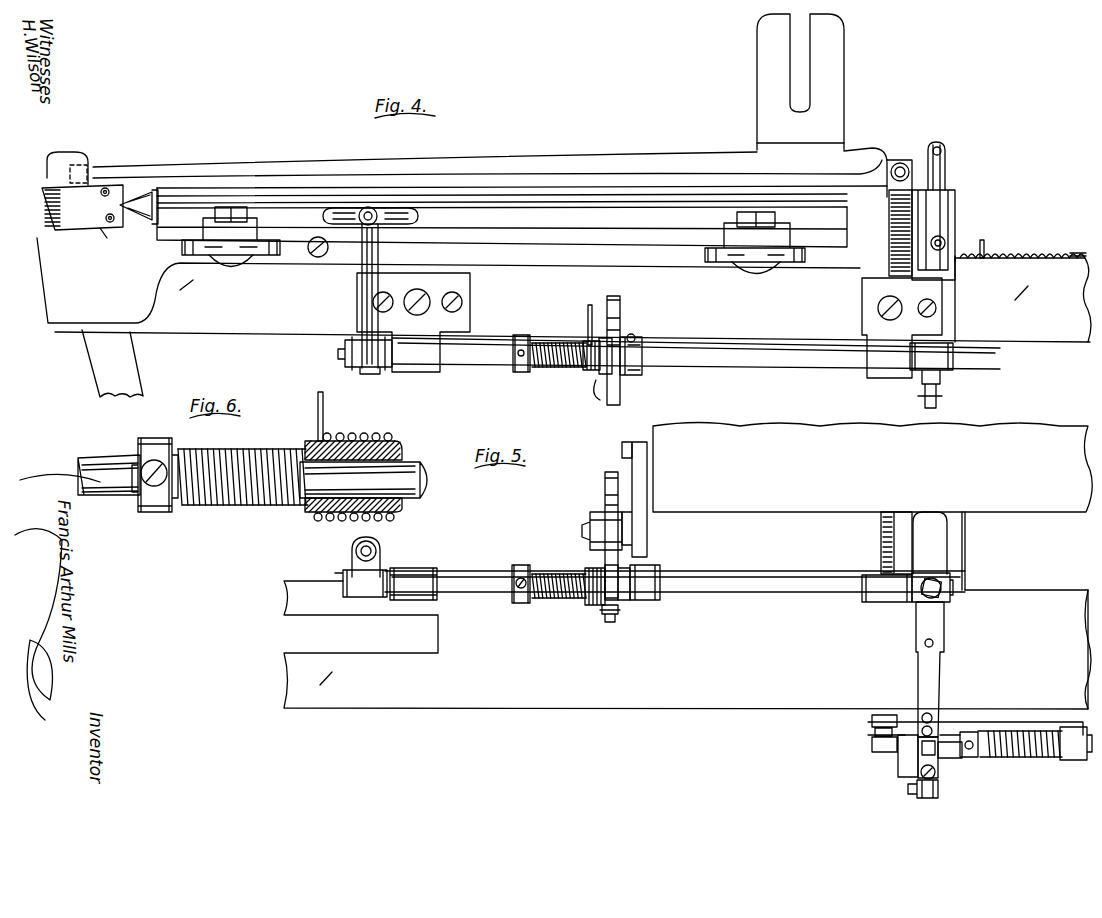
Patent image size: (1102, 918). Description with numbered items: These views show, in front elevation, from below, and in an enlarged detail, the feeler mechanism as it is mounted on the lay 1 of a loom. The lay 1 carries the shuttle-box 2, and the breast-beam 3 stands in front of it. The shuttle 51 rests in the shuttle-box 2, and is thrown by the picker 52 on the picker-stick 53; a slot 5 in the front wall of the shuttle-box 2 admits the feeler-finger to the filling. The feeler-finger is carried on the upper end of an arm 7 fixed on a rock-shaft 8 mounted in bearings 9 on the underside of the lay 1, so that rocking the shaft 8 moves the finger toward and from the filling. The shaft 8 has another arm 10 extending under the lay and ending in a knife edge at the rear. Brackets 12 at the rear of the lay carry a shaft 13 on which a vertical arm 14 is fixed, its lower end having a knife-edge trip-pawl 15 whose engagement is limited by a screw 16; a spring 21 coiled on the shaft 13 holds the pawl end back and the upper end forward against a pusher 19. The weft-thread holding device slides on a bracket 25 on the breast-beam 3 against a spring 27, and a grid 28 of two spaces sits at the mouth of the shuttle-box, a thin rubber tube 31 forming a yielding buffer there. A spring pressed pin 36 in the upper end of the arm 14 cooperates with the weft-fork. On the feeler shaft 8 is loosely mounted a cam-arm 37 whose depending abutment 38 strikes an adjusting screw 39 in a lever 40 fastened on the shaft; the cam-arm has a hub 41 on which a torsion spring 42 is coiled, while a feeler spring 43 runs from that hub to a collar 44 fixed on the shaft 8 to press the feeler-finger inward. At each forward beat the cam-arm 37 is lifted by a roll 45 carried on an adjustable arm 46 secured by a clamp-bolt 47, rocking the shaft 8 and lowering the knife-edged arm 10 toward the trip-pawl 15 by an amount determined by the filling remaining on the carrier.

In FIG. 4, the lay 1 is at (564, 290).
In FIG. 5, the lay 1 is at (687, 645).
In FIG. 4, the shuttle-box 2 is at (478, 197).
In FIG. 5, the breast-beam 3 is at (872, 468).
In FIG. 4, the slot 5 is at (415, 216).
In FIG. 4, the arm 7 is at (368, 266).
In FIG. 4, the shaft 8 is at (480, 357).
In FIG. 6, the shaft 8 is at (107, 455).
In FIG. 5, the shaft 8 is at (482, 588).
In FIG. 4, the bearings 9 is at (649, 325).
In FIG. 5, the bearings 9 is at (420, 563).
In FIG. 4, the arm 10 is at (953, 362).
In FIG. 5, the arm 10 is at (932, 672).
In FIG. 4, the brackets 12 is at (958, 254).
In FIG. 5, the brackets 12 is at (950, 762).
In FIG. 5, the shaft 13 is at (987, 762).
In FIG. 4, the arm 14 is at (928, 144).
In FIG. 5, the knife-edge trip-pawl 15 is at (930, 802).
In FIG. 5, the screw 16 is at (915, 770).
In FIG. 4, the pusher 19 is at (900, 162).
In FIG. 4, the spring 21 is at (1022, 258).
In FIG. 5, the spring 21 is at (1022, 760).
In FIG. 5, the bracket 25 is at (967, 545).
In FIG. 5, the spring 27 is at (880, 540).
In FIG. 4, the grid 28 is at (955, 200).
In FIG. 4, the rubber tube 31 is at (888, 220).
In FIG. 4, the spring pressed pin 36 is at (945, 151).
In FIG. 4, the cam-arm 37 is at (622, 313).
In FIG. 5, the cam-arm 37 is at (603, 483).
In FIG. 4, the depending abutment 38 is at (617, 392).
In FIG. 5, the depending abutment 38 is at (605, 565).
In FIG. 5, the adjusting screw 39 is at (615, 622).
In FIG. 5, the lever 40 is at (645, 598).
In FIG. 4, the hub 41 is at (588, 362).
In FIG. 6, the hub 41 is at (395, 441).
In FIG. 4, the torsion spring 42 is at (604, 370).
In FIG. 6, the torsion spring 42 is at (340, 434).
In FIG. 5, the torsion spring 42 is at (592, 604).
In FIG. 4, the feeler spring 43 is at (540, 366).
In FIG. 6, the feeler spring 43 is at (235, 505).
In FIG. 5, the feeler spring 43 is at (545, 598).
In FIG. 4, the collar 44 is at (521, 335).
In FIG. 6, the collar 44 is at (150, 512).
In FIG. 5, the collar 44 is at (521, 565).
In FIG. 5, the roll 45 is at (588, 516).
In FIG. 5, the arm 46 is at (660, 527).
In FIG. 5, the clamp-bolt 47 is at (620, 452).
In FIG. 4, the shuttle 51 is at (124, 202).
In FIG. 4, the picker 52 is at (82, 195).
In FIG. 4, the picker-stick 53 is at (112, 363).